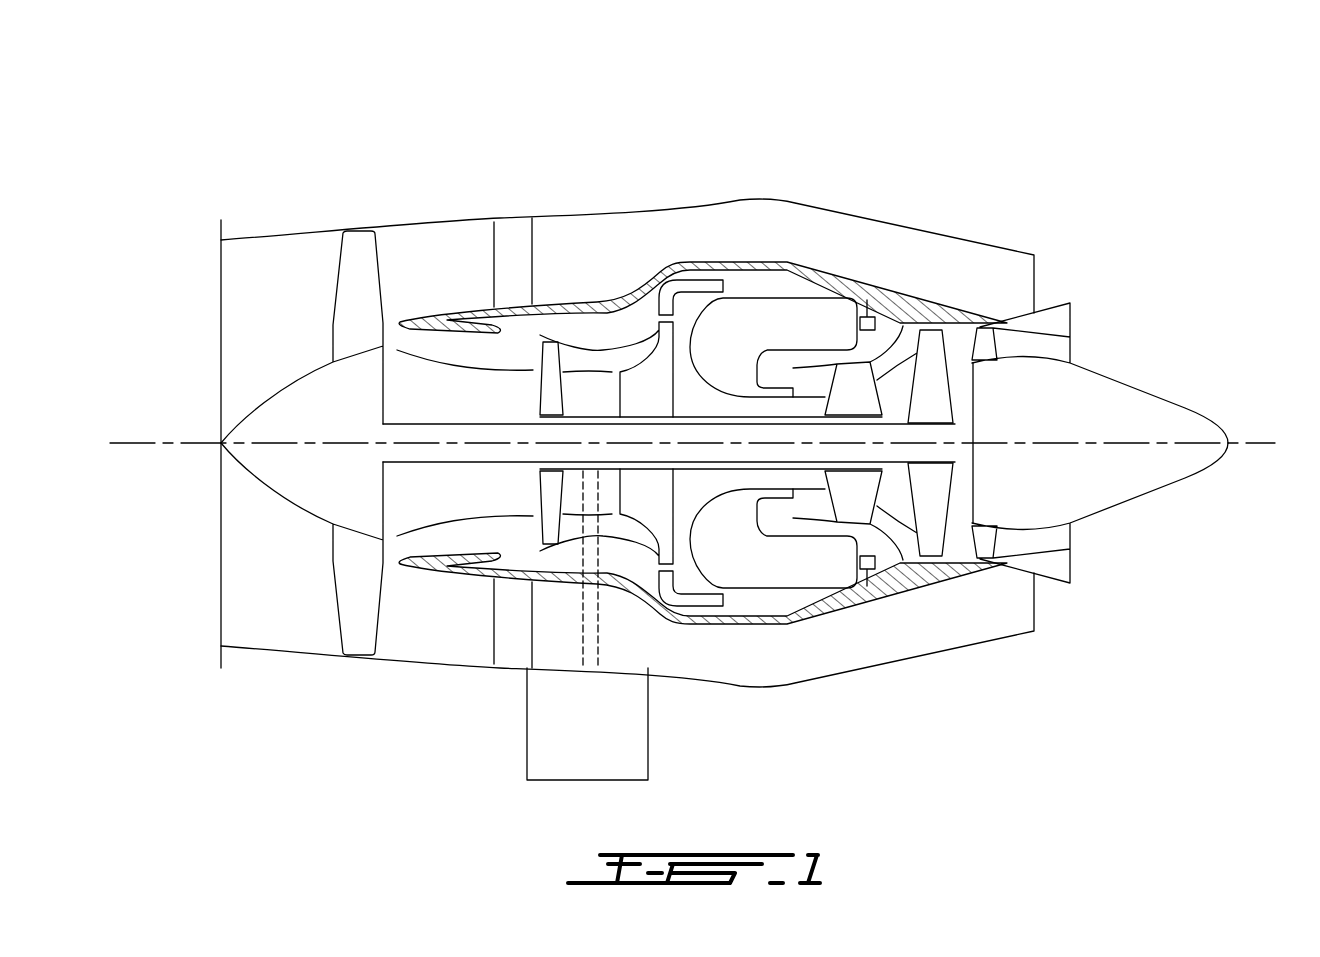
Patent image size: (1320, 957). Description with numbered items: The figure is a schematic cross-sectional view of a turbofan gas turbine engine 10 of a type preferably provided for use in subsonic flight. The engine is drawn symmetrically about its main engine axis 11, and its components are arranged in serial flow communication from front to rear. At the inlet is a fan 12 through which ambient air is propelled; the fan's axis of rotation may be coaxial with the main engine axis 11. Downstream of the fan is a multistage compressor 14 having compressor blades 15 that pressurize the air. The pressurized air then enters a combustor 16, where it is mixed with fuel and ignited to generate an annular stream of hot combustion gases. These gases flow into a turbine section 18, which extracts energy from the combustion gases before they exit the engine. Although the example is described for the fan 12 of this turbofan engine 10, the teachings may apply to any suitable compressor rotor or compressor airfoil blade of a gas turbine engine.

The turbofan gas turbine engine 10 is at (918, 152).
The main engine axis 11 is at (1250, 440).
The fan 12 is at (353, 582).
The multistage compressor 14 is at (603, 363).
The compressor blades 15 is at (552, 357).
The combustor 16 is at (775, 317).
The turbine section 18 is at (893, 503).